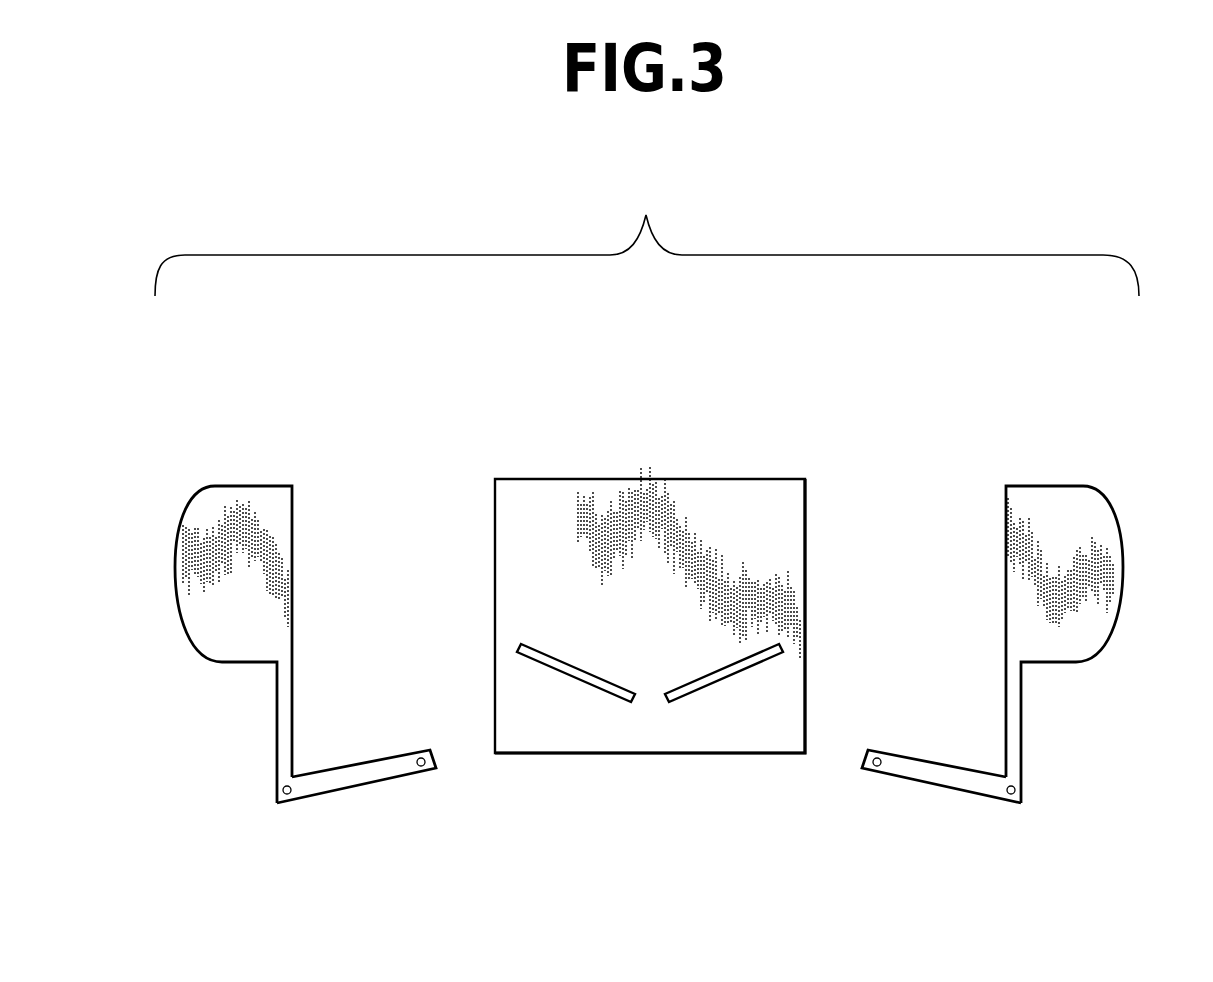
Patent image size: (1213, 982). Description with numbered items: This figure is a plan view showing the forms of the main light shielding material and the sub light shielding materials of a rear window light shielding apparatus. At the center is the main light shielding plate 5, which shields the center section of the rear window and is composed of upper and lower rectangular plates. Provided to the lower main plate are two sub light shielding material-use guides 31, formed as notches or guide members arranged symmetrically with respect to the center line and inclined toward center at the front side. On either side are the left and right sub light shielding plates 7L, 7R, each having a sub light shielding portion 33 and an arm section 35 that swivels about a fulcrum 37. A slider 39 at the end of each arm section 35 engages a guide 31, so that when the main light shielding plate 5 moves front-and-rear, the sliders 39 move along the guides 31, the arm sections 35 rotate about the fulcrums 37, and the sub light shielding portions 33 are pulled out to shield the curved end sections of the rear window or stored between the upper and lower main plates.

The main light shielding plate 5 is at (641, 480).
The left sub light shielding plate 7L is at (250, 486).
The right sub light shielding plate 7R is at (1047, 486).
The sub light shielding material-use guide 31 is at (703, 680).
The sub light shielding portion 33 is at (185, 566).
The arm section 35 is at (410, 785).
The fulcrum 37 is at (293, 778).
The slider 39 is at (428, 770).